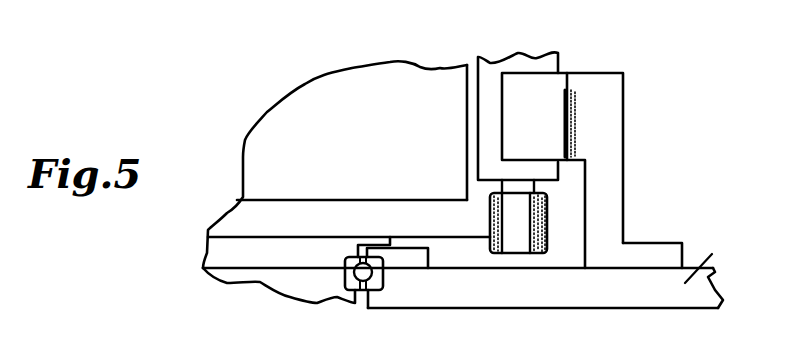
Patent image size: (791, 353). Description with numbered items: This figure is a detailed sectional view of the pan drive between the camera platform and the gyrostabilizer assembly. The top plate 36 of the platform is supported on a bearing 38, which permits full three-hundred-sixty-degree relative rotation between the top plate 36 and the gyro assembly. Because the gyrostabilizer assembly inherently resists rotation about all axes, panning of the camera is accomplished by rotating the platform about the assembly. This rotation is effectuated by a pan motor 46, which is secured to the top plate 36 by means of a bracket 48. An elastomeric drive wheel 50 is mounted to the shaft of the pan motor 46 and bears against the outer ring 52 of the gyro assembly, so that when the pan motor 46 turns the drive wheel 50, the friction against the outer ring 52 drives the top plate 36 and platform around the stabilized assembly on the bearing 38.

The top plate 36 is at (469, 263).
The bearing 38 is at (346, 272).
The pan motor 46 is at (530, 66).
The bracket 48 is at (585, 128).
The elastomeric drive wheel 50 is at (517, 232).
The outer ring 52 is at (240, 213).